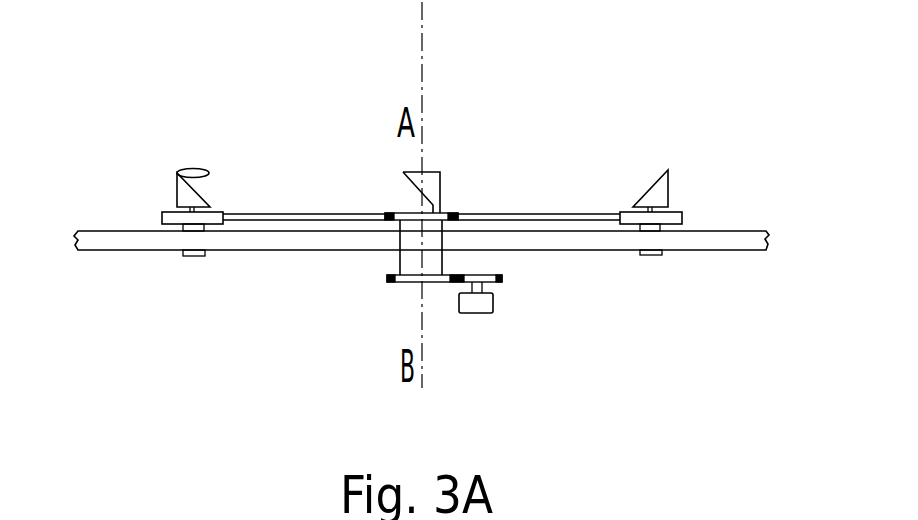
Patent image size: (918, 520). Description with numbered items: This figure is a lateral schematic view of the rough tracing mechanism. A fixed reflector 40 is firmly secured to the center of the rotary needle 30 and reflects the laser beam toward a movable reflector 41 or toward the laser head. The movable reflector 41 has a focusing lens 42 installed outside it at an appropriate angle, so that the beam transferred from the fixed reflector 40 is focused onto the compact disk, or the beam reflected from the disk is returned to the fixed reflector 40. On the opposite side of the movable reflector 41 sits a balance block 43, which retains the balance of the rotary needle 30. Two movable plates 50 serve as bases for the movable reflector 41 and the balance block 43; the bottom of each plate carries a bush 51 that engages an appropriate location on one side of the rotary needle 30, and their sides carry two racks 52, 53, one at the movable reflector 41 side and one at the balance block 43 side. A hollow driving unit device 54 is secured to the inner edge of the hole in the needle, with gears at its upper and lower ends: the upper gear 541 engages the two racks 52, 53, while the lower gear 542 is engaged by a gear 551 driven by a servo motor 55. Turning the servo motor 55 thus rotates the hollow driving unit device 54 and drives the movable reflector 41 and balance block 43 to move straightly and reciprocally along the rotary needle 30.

The rotary needle 30 is at (728, 247).
The fixed reflector 40 is at (433, 190).
The movable reflector 41 is at (213, 193).
The focusing lens 42 is at (193, 170).
The balance block 43 is at (658, 190).
The movable plate 50 is at (165, 214).
The bush 51 is at (195, 256).
The rack 52 is at (333, 214).
The rack 53 is at (580, 214).
The hollow driving unit device 54 is at (410, 262).
The upper gear 541 is at (390, 213).
The lower gear 542 is at (388, 282).
The servo motor 55 is at (473, 305).
The gear 551 is at (500, 278).